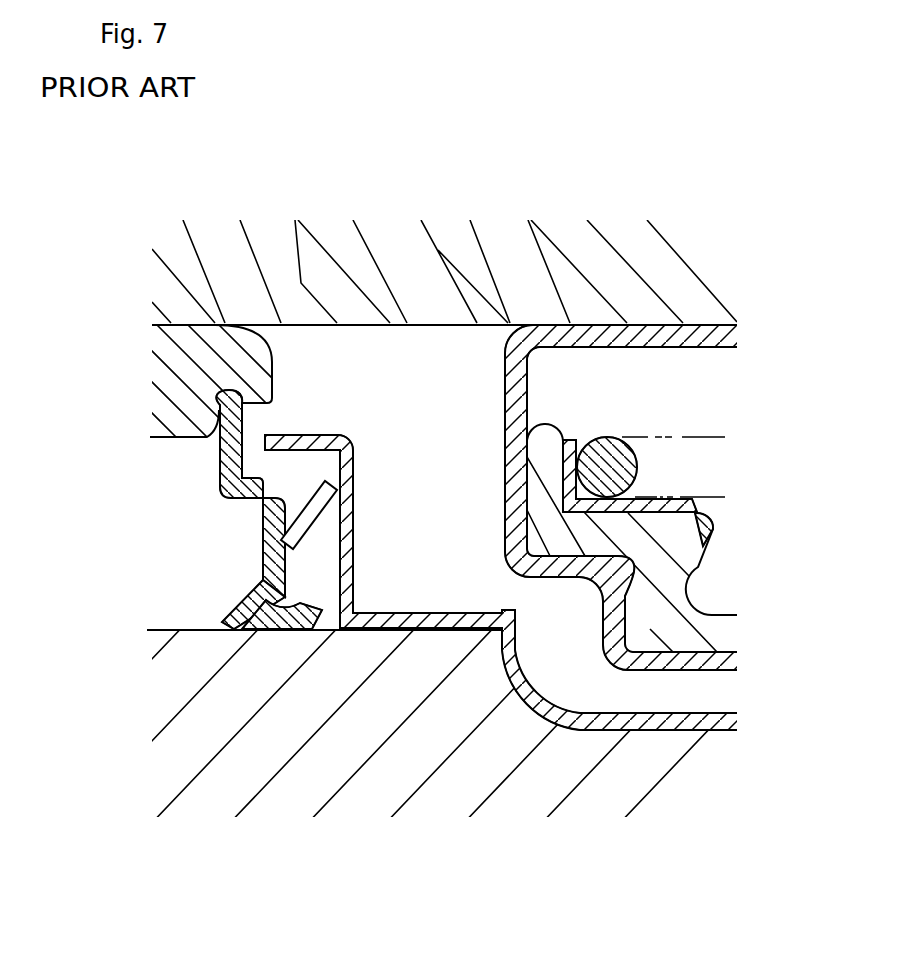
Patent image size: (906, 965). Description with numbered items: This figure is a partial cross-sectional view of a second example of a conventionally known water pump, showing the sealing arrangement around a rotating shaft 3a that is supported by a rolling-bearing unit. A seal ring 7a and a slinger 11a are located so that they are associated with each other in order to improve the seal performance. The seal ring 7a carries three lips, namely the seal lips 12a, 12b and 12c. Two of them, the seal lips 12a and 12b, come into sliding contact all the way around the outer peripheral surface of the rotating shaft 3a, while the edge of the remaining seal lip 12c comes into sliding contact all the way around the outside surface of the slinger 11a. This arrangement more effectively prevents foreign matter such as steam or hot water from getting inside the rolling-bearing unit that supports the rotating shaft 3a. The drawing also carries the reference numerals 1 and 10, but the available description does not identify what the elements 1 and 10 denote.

The housing 1 is at (513, 262).
The rotating shaft 3a is at (217, 745).
The seal ring 7a is at (280, 528).
The oil seal 10 is at (712, 532).
The slinger 11a is at (445, 625).
The seal lip 12a is at (232, 613).
The seal lip 12b is at (297, 630).
The seal lip 12c is at (330, 484).